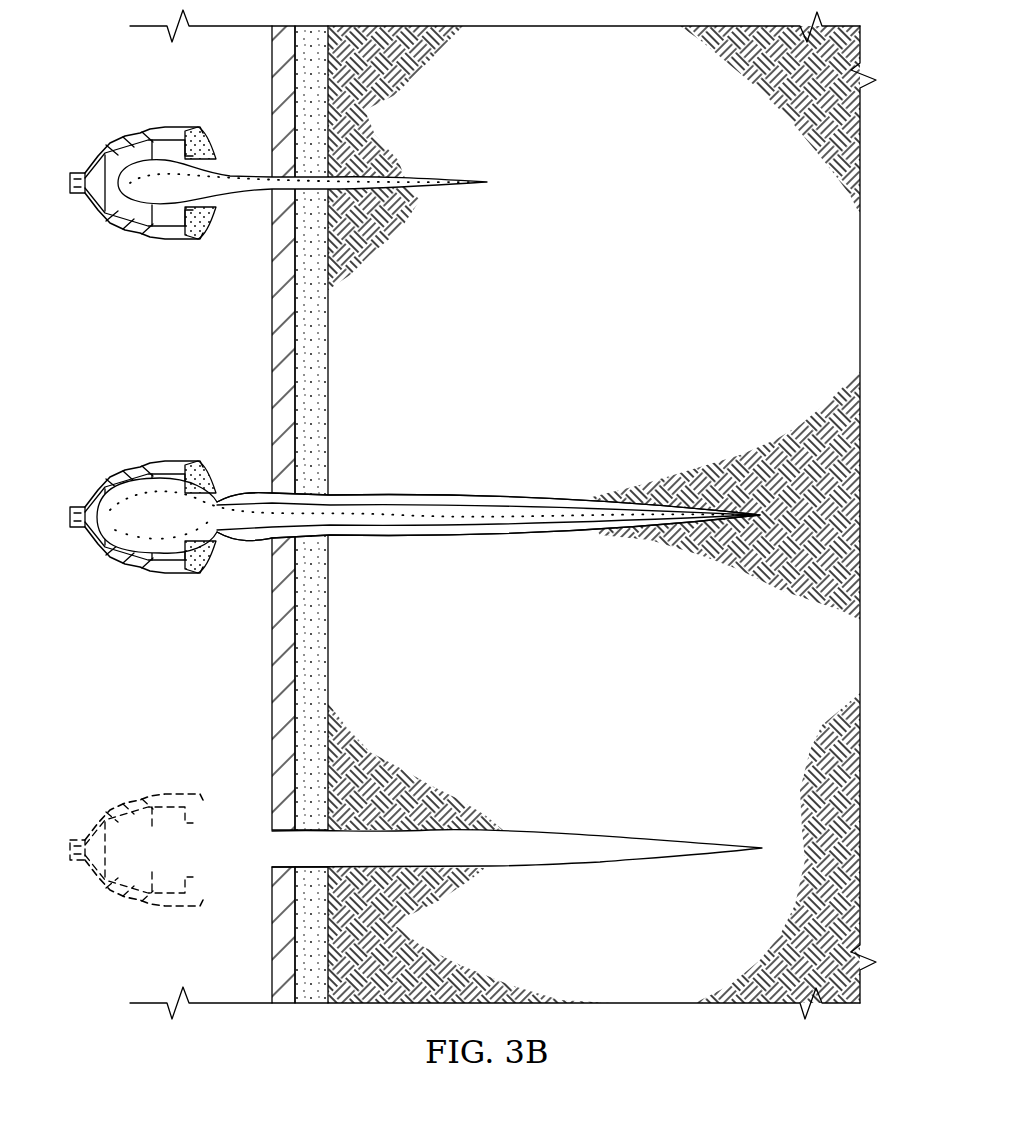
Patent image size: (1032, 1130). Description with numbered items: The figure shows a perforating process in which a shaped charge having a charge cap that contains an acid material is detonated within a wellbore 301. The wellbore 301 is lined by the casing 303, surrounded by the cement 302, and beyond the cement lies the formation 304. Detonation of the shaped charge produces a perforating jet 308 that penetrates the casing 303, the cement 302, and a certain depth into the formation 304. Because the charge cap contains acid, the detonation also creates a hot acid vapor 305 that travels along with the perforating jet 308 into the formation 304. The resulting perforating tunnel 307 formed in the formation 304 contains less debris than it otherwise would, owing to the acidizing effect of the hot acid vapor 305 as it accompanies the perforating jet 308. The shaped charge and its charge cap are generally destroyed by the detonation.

The wellbore 301 is at (240, 94).
The cement 302 is at (325, 372).
The casing 303 is at (270, 385).
The formation 304 is at (613, 230).
The hot acid vapor 305 is at (430, 500).
The perforating tunnel 307 is at (562, 828).
The perforating jet 308 is at (368, 515).